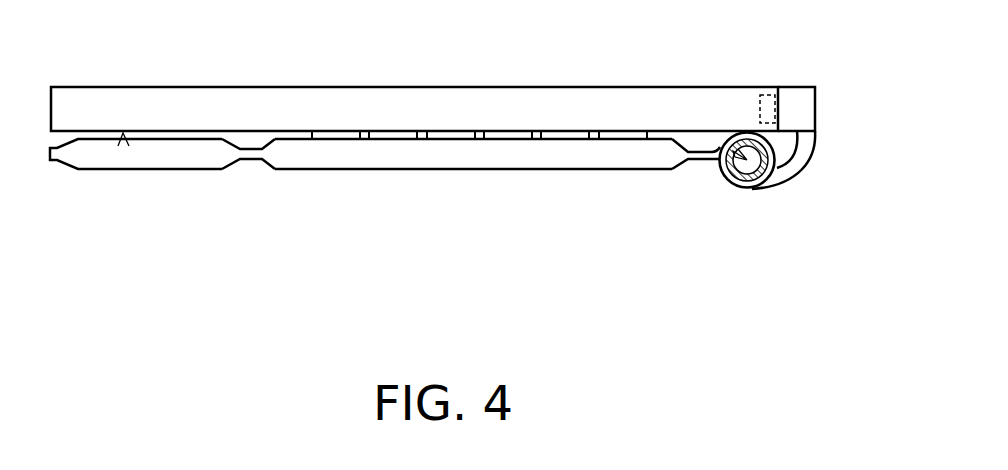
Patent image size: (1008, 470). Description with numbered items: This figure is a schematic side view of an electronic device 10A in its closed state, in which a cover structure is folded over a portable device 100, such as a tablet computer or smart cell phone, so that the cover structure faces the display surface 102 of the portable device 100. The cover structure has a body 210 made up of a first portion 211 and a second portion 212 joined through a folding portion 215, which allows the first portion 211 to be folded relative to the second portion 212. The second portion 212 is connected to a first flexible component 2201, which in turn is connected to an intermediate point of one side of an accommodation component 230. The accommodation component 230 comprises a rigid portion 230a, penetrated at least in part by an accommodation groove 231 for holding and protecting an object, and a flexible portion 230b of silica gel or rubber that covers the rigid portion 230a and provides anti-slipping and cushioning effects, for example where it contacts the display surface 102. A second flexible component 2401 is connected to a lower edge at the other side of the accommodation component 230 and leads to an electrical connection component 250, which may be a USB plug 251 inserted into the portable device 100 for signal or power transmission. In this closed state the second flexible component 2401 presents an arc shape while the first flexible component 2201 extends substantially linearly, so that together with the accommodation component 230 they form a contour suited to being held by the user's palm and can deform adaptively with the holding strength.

The electronic device 10A is at (842, 367).
The portable device 100 is at (472, 107).
The display surface 102 is at (123, 133).
The body 210 is at (385, 224).
The first portion 211 is at (167, 158).
The folding portion 215 is at (252, 150).
The second portion 212 is at (453, 160).
The first flexible component 2201 is at (700, 153).
The accommodation component 230 is at (755, 158).
The rigid portion 230a is at (747, 181).
The flexible portion 230b is at (803, 196).
The accommodation groove 231 is at (733, 153).
The second flexible component 2401 is at (800, 147).
The electrical connection component 250 is at (788, 97).
The USB plug 251 is at (763, 88).